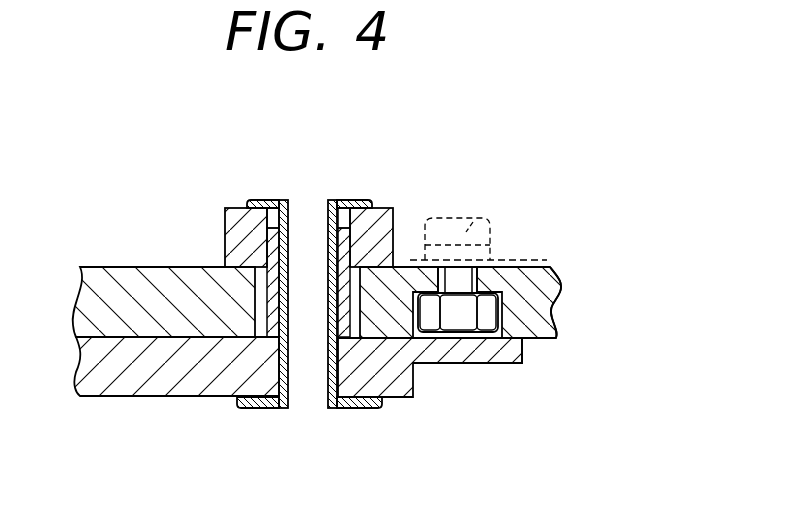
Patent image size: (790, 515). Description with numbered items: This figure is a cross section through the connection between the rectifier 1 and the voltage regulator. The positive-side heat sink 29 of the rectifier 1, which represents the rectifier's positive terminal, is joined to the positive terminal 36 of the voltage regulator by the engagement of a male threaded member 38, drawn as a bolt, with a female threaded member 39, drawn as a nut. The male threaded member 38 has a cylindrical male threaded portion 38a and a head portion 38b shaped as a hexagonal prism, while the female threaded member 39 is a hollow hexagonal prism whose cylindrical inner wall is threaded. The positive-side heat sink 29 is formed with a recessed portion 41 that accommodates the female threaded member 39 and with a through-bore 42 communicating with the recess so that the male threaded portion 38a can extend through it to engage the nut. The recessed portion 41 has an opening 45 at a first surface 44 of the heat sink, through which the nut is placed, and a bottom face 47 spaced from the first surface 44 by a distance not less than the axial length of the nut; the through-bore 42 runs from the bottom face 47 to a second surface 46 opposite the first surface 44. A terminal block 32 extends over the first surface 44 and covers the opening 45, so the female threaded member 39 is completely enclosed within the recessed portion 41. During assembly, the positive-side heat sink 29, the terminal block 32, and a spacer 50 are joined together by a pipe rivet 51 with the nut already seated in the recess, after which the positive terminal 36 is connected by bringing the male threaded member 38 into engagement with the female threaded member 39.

The rectifier 1 is at (172, 155).
The spacer 50 is at (240, 227).
The pipe rivet 51 is at (253, 202).
The first surface 44 is at (355, 399).
The recessed portion 41 is at (413, 348).
The through-bore 42 is at (540, 272).
The positive terminal 36 is at (498, 265).
The second surface 46 is at (530, 262).
The bottom face 47 is at (537, 317).
The positive-side heat sink 29 is at (538, 340).
The terminal block 32 is at (510, 364).
The opening 45 is at (490, 342).
The female threaded member 39 is at (455, 318).
The male threaded member 38 is at (493, 145).
The male threaded portion 38a is at (415, 262).
The head portion 38b is at (448, 234).